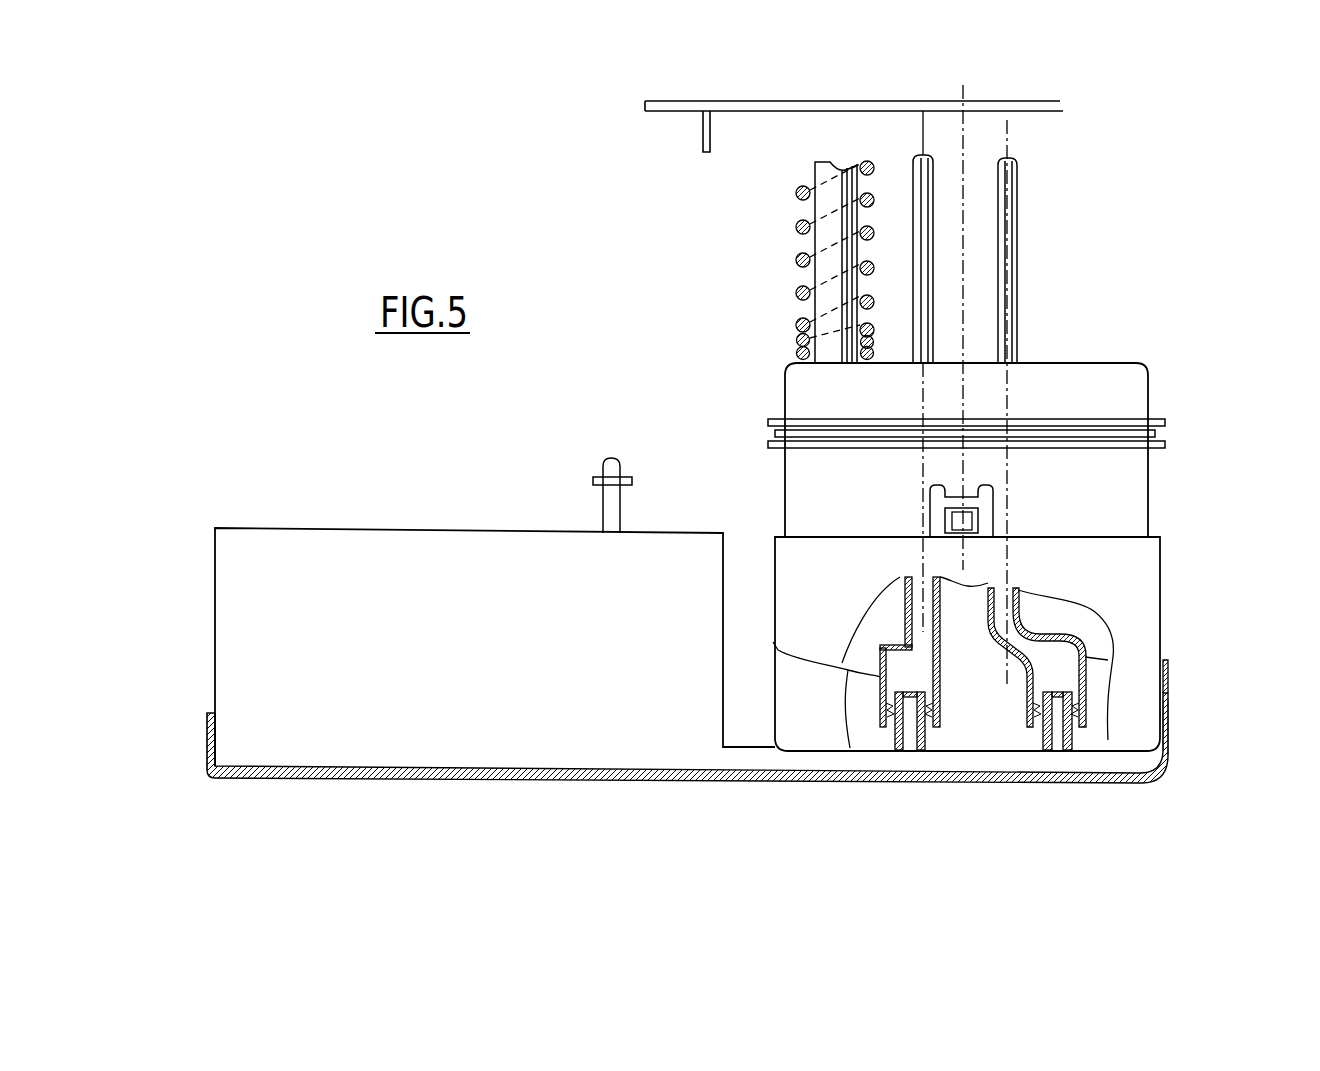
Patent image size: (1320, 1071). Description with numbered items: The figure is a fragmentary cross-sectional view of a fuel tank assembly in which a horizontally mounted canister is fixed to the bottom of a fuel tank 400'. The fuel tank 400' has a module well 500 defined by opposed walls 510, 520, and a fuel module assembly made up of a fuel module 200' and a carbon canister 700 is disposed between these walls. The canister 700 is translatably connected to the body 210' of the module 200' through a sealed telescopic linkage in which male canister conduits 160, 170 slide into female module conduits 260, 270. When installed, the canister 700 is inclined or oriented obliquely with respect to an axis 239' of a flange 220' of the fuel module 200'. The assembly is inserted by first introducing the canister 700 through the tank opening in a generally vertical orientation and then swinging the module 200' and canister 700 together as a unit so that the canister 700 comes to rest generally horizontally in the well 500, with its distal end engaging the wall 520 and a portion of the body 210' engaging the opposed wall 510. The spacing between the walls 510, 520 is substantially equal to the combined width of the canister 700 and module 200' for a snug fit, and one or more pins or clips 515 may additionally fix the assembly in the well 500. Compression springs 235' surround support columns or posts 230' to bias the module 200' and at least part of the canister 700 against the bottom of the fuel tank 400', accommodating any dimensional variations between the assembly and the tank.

The fuel module 200' is at (962, 435).
The body 210' is at (995, 557).
The flange 220' is at (854, 96).
The support columns or posts 230' is at (787, 261).
The compression springs 235' is at (787, 260).
The axis 239' is at (1029, 309).
The female module conduit 260 is at (778, 650).
The female module conduit 270 is at (1107, 660).
The male canister conduit 160 is at (892, 737).
The male canister conduit 170 is at (1036, 737).
The fuel tank 400' is at (704, 740).
The module well 500 is at (596, 787).
The wall 510 is at (1172, 722).
The pins or clips 515 is at (1170, 680).
The wall 520 is at (212, 740).
The carbon canister 700 is at (347, 565).